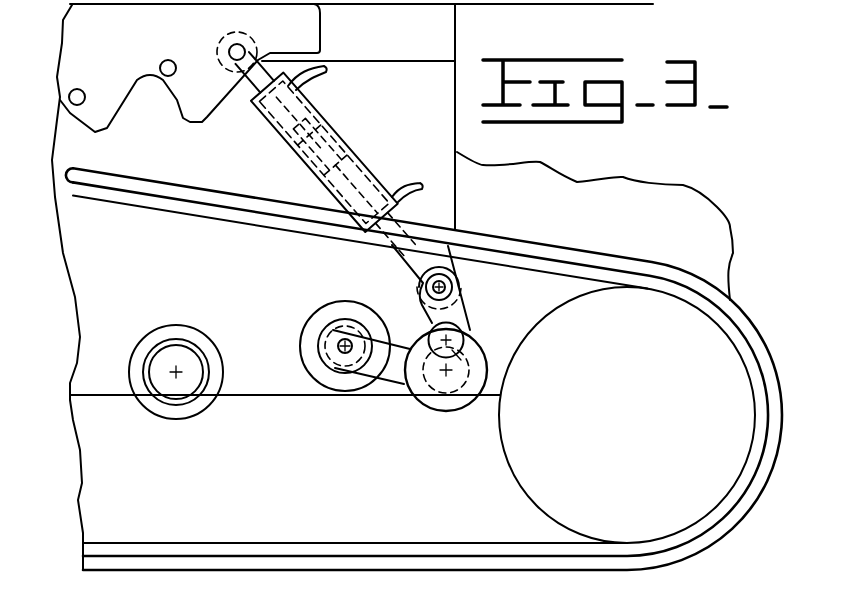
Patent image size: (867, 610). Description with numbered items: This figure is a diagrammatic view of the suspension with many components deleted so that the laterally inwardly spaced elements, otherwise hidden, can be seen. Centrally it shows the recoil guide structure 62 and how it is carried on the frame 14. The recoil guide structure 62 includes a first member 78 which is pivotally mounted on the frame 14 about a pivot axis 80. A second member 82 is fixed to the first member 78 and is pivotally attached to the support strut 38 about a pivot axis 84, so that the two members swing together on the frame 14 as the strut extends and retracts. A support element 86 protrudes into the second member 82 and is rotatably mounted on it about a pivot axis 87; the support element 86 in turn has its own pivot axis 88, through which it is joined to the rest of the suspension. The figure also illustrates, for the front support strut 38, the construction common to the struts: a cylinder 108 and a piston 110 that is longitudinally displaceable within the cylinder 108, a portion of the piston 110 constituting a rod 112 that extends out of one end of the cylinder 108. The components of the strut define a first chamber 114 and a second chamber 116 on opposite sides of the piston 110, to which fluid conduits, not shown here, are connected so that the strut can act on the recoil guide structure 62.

The frame 14 is at (340, 319).
The support strut 38 is at (322, 144).
The recoil guide structure 62 is at (455, 420).
The first member 78 is at (397, 367).
The pivot axis 80 is at (340, 345).
The second member 82 is at (457, 316).
The pivot axis 84 is at (452, 286).
The support element 86 is at (457, 357).
The pivot axis 87 is at (445, 371).
The pivot axis 88 is at (464, 336).
The cylinder 108 is at (270, 128).
The piston 110 is at (335, 126).
The rod 112 is at (370, 171).
The first chamber 114 is at (280, 153).
The second chamber 116 is at (362, 148).